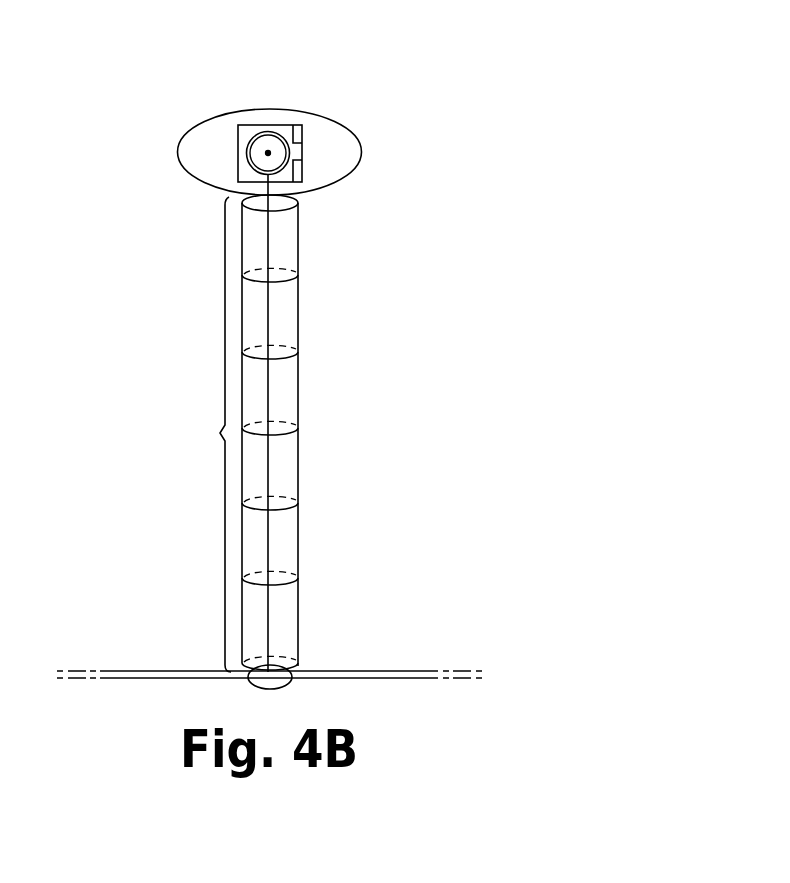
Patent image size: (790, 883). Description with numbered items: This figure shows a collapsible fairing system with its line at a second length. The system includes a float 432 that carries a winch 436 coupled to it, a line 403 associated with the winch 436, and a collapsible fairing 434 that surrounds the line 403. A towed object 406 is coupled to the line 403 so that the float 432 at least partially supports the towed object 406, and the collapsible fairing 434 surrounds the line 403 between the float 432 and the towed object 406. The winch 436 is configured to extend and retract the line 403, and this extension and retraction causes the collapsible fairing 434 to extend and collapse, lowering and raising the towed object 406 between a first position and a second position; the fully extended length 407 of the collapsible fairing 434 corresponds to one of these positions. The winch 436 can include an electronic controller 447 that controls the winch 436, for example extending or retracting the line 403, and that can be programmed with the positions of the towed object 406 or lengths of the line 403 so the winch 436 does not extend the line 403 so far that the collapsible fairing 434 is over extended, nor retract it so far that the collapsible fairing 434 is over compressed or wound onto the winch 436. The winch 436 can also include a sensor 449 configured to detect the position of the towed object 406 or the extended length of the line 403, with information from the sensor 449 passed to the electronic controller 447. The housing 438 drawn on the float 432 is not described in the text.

The float 432 is at (362, 150).
The housing 438 is at (248, 139).
The winch 436 is at (278, 131).
The electronic controller 447 is at (310, 127).
The sensor 449 is at (309, 181).
The collapsible fairing 434 is at (298, 250).
The line 403 is at (270, 340).
The fully extended length 407 is at (204, 434).
The towed object 406 is at (427, 671).